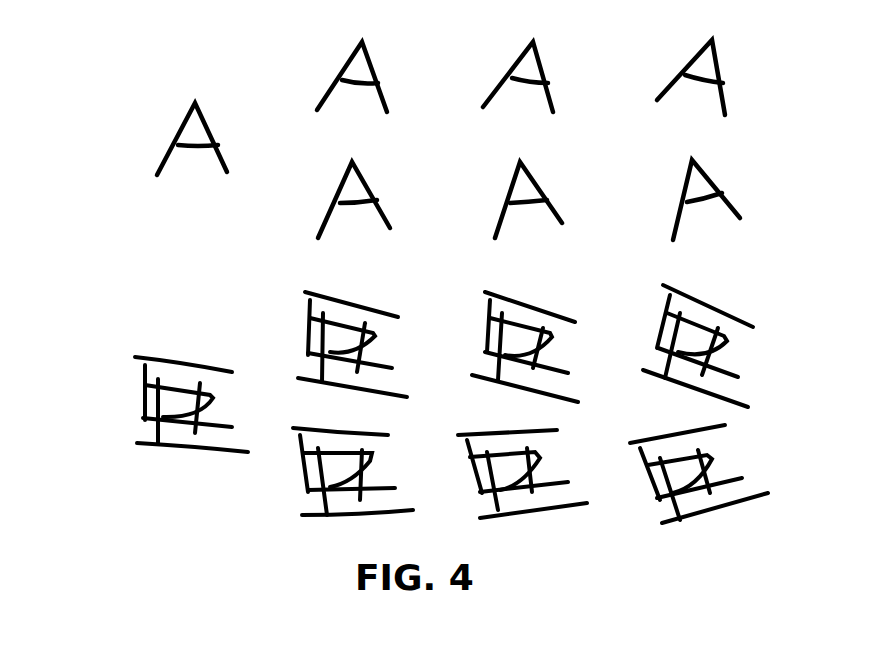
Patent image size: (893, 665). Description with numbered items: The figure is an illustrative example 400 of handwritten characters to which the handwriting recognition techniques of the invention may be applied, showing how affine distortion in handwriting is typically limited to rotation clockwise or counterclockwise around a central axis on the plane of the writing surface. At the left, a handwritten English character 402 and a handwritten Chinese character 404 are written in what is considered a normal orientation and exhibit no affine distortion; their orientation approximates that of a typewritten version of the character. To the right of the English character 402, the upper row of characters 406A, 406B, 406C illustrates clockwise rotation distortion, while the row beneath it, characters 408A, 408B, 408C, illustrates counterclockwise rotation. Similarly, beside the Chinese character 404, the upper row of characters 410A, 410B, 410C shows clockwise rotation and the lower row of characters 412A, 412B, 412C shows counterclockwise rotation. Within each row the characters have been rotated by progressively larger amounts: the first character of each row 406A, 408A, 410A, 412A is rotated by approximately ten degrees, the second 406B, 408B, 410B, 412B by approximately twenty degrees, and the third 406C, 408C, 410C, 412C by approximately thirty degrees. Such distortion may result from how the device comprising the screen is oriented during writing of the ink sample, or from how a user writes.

The illustrative example 400 is at (136, 42).
The English character 402 is at (145, 140).
The Chinese character 404 is at (137, 388).
The clockwise rotated English character 406A is at (317, 77).
The clockwise rotated English character 406B is at (498, 77).
The clockwise rotated English character 406C is at (670, 77).
The counterclockwise rotated English character 408A is at (320, 210).
The counterclockwise rotated English character 408B is at (502, 210).
The counterclockwise rotated English character 408C is at (672, 210).
The clockwise rotated Chinese character 410A is at (300, 313).
The clockwise rotated Chinese character 410B is at (478, 318).
The clockwise rotated Chinese character 410C is at (655, 313).
The counterclockwise rotated Chinese character 412A is at (297, 517).
The counterclockwise rotated Chinese character 412B is at (472, 508).
The counterclockwise rotated Chinese character 412C is at (647, 517).